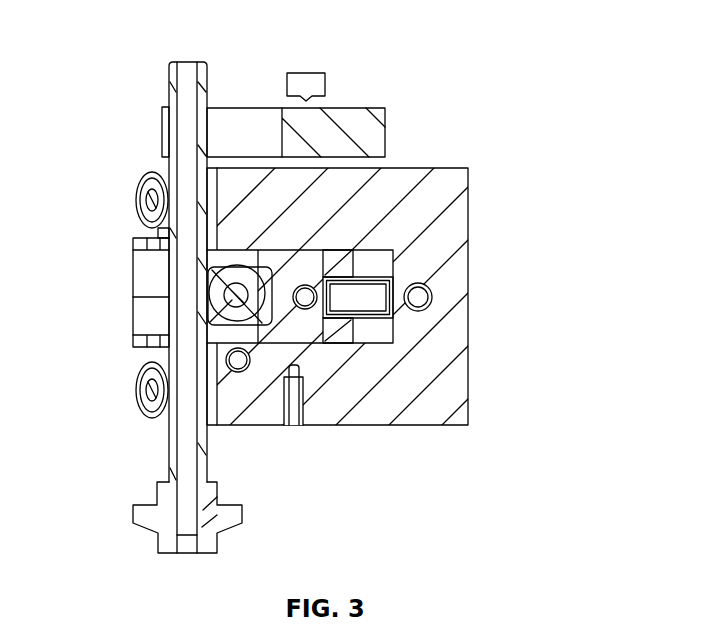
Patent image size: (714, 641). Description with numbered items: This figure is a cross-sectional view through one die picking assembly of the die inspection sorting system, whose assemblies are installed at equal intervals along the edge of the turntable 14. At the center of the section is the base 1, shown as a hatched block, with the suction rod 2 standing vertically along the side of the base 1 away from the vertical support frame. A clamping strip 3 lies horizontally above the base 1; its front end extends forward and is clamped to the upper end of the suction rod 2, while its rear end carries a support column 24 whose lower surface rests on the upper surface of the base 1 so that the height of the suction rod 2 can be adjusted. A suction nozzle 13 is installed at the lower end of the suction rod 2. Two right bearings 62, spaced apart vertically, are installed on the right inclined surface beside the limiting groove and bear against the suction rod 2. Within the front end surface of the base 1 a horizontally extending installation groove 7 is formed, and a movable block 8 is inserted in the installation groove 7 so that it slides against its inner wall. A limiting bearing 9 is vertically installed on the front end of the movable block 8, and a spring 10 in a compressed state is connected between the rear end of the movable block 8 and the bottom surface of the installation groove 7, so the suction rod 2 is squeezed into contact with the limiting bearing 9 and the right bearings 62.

The base 1 is at (447, 333).
The suction rod 2 is at (191, 149).
The clamping strip 3 is at (327, 137).
The installation groove 7 is at (380, 330).
The movable block 8 is at (306, 331).
The limiting bearing 9 is at (243, 333).
The spring 10 is at (373, 293).
The suction nozzle 13 is at (160, 517).
The turntable 14 is at (150, 280).
The support column 24 is at (307, 93).
The right bearings 62 is at (135, 193).